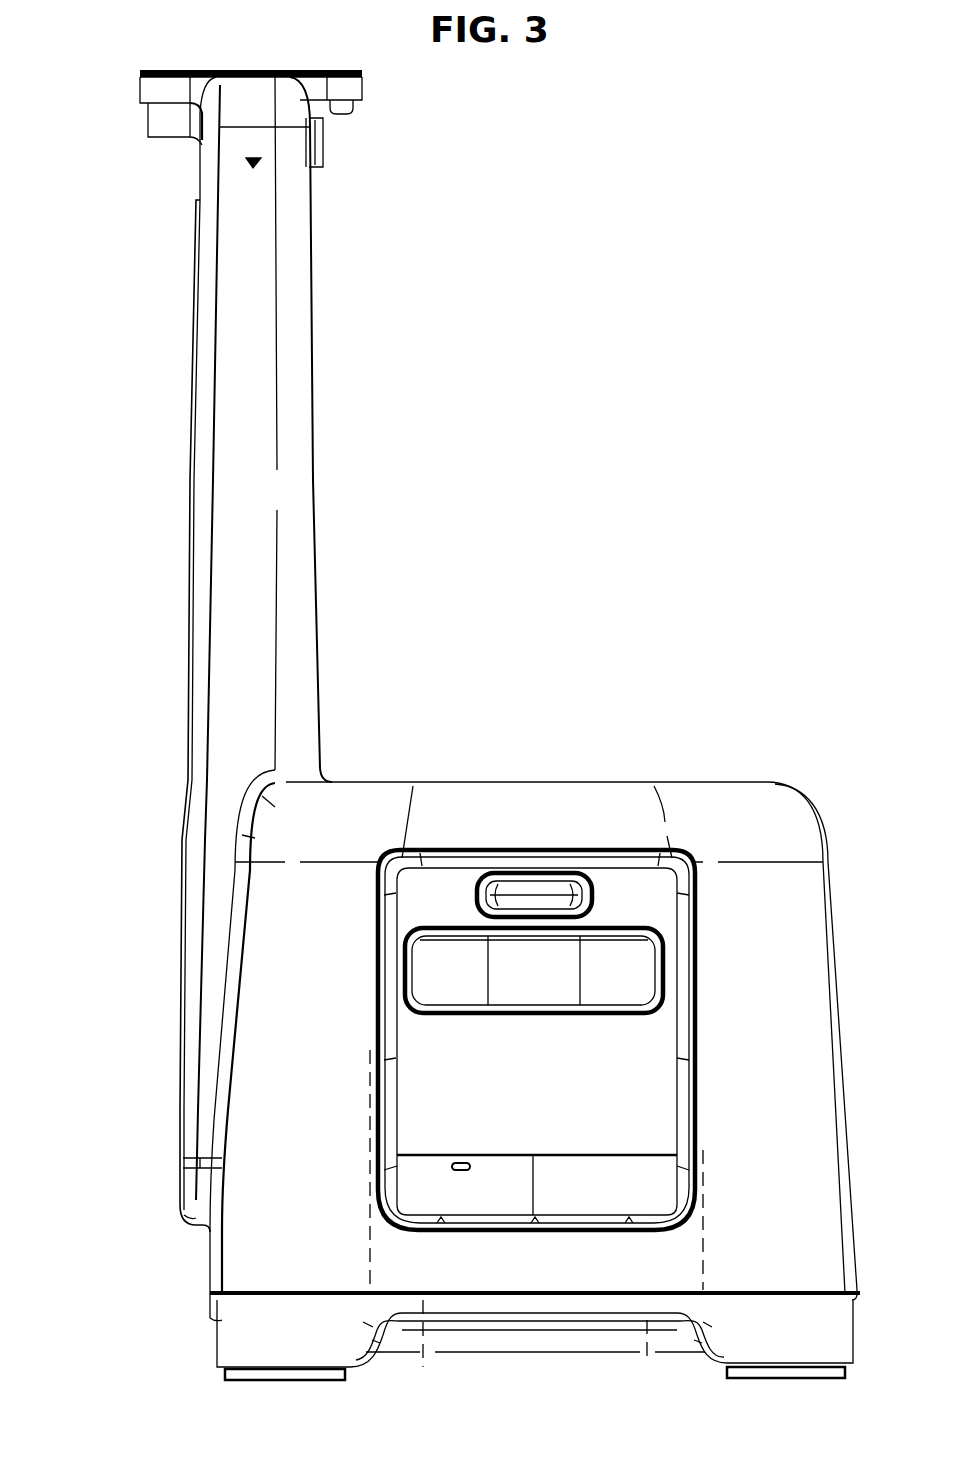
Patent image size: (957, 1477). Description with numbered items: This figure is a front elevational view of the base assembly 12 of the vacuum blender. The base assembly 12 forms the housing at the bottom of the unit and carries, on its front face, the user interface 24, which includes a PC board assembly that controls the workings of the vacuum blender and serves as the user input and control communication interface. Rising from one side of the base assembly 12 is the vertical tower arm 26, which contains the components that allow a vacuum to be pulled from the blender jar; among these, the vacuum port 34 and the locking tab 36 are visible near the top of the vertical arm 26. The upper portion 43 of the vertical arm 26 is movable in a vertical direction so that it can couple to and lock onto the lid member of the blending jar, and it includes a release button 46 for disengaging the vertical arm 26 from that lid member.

The base assembly 12 is at (790, 786).
The user interface 24 is at (392, 1216).
The vertical tower arm 26 is at (318, 512).
The vacuum port 34 is at (326, 138).
The locking tab 36 is at (345, 111).
The upper portion 43 is at (236, 97).
The release button 46 is at (164, 122).